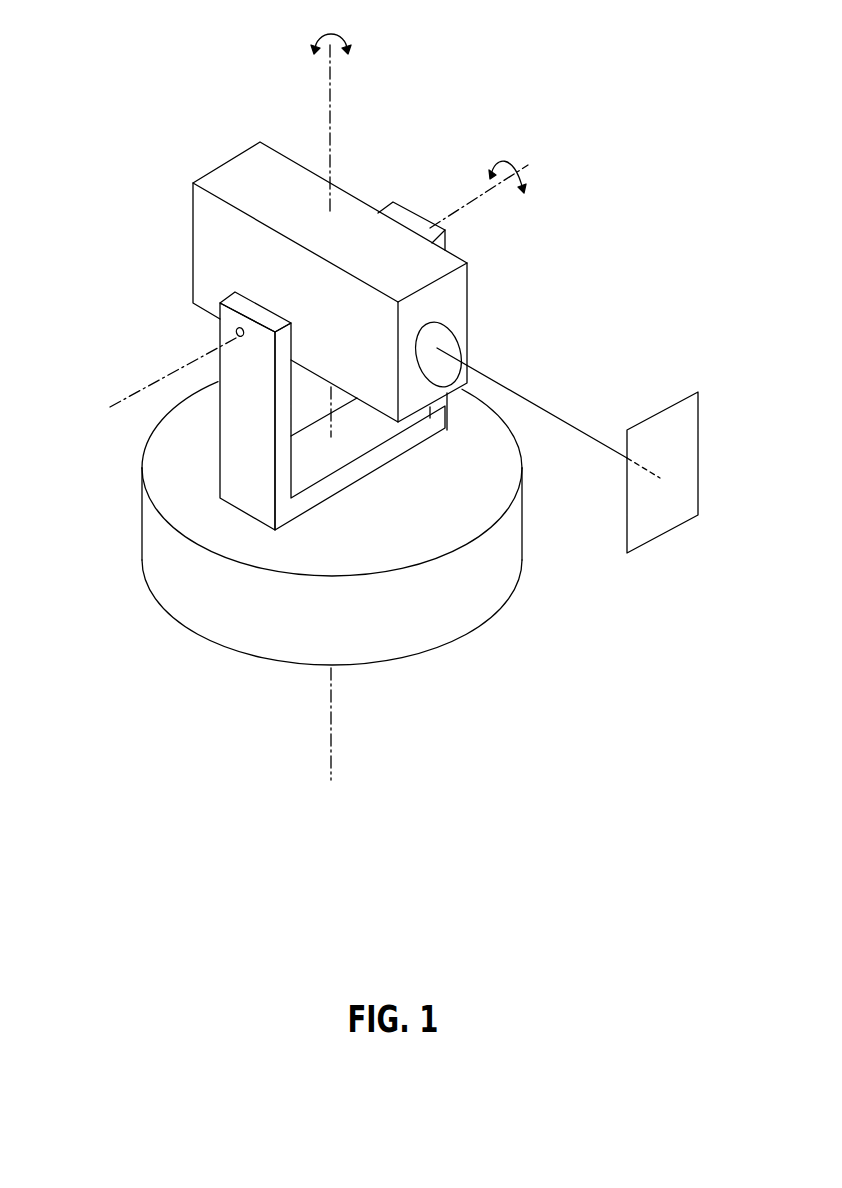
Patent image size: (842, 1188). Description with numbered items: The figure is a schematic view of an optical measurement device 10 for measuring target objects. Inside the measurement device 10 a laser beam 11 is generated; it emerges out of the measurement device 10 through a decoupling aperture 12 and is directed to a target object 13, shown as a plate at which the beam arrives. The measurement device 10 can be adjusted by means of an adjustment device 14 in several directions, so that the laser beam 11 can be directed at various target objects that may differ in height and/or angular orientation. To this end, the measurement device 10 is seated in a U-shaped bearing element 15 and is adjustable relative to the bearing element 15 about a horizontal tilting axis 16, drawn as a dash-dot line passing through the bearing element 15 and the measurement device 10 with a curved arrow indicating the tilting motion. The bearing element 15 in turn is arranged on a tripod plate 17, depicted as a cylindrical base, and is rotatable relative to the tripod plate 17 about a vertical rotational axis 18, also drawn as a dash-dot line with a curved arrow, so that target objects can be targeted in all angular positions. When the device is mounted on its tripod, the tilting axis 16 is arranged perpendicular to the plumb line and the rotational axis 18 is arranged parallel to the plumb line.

The optical measurement device 10 is at (203, 150).
The laser beam 11 is at (530, 400).
The decoupling aperture 12 is at (452, 336).
The target object 13 is at (666, 512).
The adjustment device 14 is at (178, 477).
The U-shaped bearing element 15 is at (363, 468).
The horizontal tilting axis 16 is at (155, 383).
The tripod plate 17 is at (457, 620).
The vertical rotational axis 18 is at (329, 82).